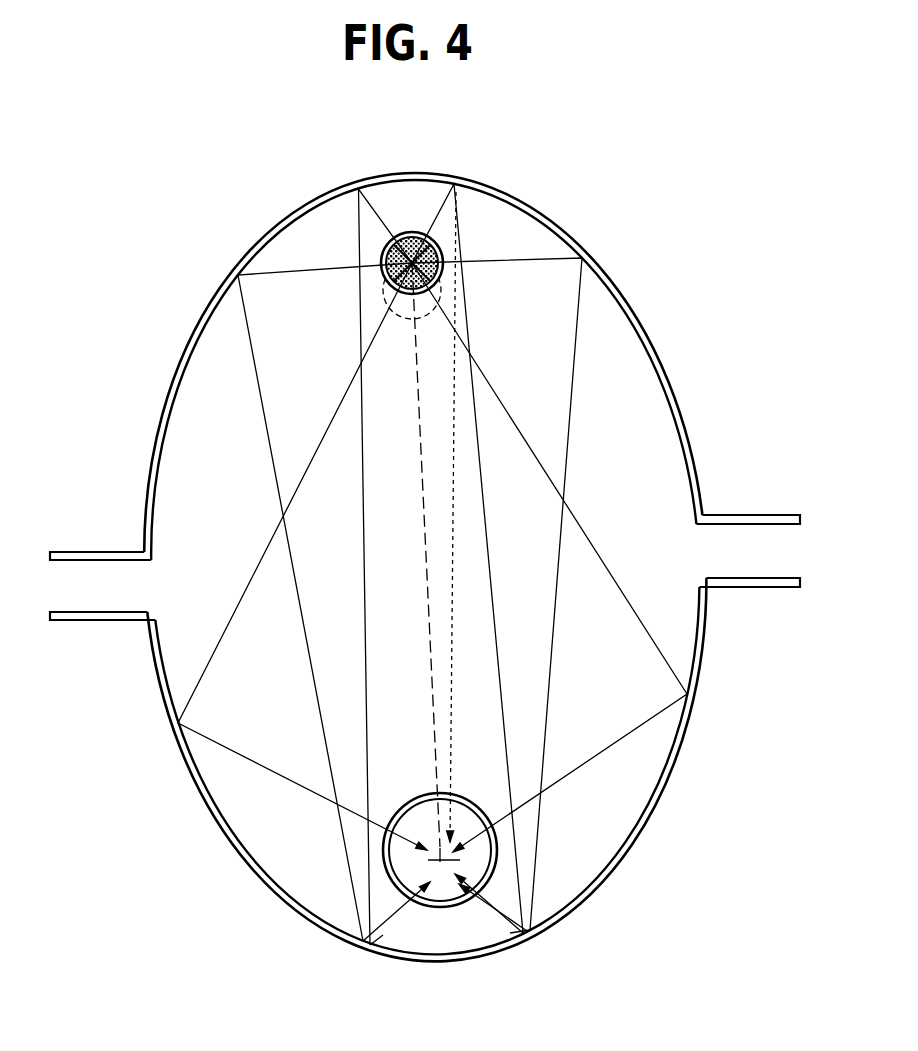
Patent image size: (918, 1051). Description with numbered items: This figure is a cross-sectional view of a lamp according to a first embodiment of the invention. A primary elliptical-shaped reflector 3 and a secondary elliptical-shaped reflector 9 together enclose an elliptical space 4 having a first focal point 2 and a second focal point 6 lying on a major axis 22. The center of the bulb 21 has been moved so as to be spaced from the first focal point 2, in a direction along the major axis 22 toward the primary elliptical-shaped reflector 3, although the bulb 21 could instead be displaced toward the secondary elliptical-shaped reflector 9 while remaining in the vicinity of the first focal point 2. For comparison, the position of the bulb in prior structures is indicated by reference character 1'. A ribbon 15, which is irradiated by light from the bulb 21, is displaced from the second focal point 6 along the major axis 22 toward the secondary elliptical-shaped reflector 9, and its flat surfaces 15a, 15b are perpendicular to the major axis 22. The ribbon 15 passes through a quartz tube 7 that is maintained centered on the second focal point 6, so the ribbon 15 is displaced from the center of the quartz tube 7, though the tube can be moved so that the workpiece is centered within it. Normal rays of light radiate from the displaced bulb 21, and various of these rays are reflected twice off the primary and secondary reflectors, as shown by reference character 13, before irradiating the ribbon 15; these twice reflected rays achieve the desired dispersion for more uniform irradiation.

The first focal point 2 is at (443, 292).
The bulb 21 is at (421, 228).
The major axis 22 is at (410, 229).
The position of the bulb in prior structures 1' is at (533, 278).
The primary elliptical-shaped reflector 3 is at (667, 390).
The elliptical space 4 is at (648, 482).
The quartz tube 7 is at (421, 792).
The secondary elliptical-shaped reflector 9 is at (660, 800).
The second focal point 6 is at (433, 853).
The ribbon 15 is at (467, 853).
The flat surface of ribbon 15a is at (441, 862).
The flat surface of ribbon 15b is at (424, 874).
The twice reflected rays 13 is at (383, 935).